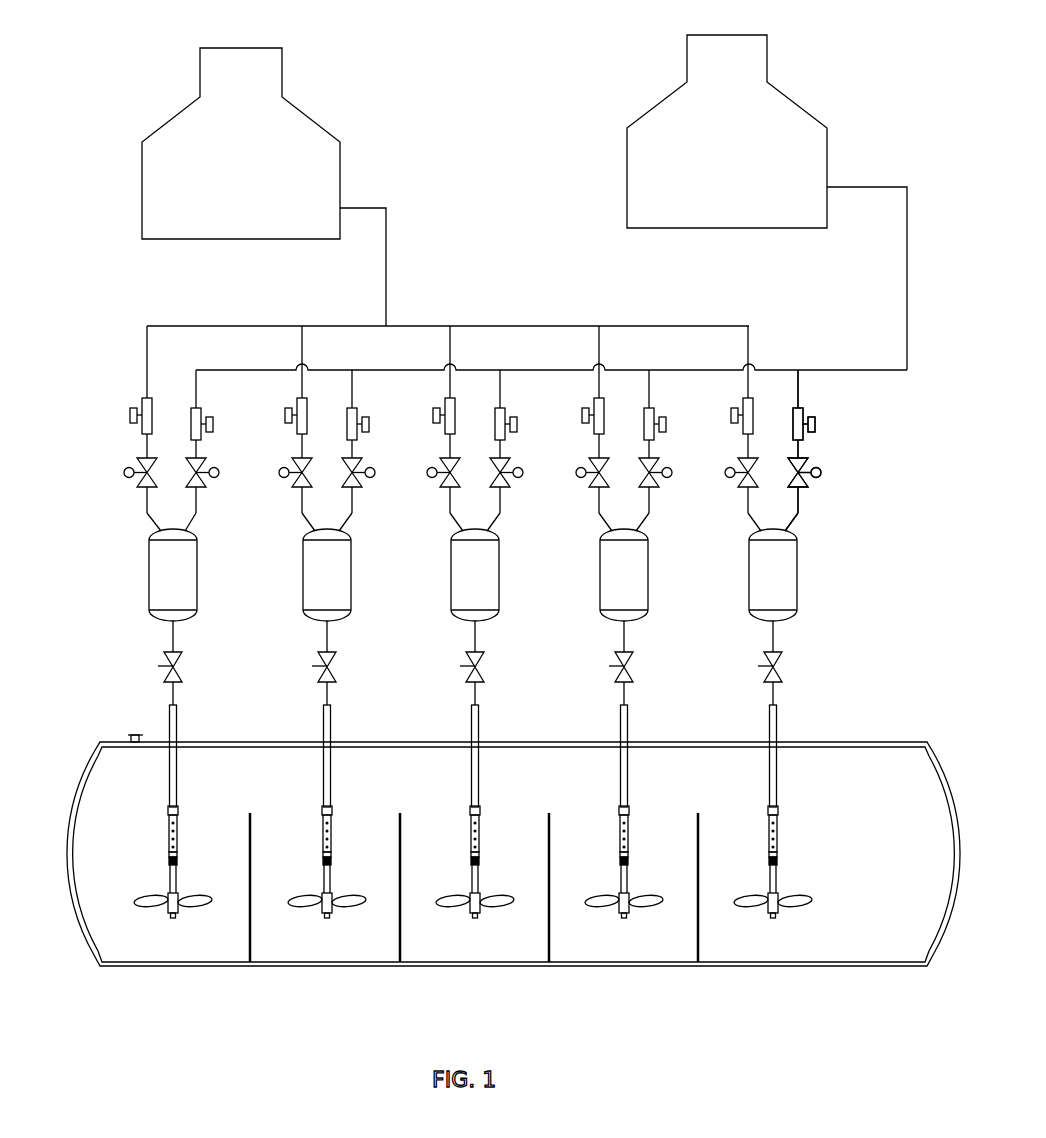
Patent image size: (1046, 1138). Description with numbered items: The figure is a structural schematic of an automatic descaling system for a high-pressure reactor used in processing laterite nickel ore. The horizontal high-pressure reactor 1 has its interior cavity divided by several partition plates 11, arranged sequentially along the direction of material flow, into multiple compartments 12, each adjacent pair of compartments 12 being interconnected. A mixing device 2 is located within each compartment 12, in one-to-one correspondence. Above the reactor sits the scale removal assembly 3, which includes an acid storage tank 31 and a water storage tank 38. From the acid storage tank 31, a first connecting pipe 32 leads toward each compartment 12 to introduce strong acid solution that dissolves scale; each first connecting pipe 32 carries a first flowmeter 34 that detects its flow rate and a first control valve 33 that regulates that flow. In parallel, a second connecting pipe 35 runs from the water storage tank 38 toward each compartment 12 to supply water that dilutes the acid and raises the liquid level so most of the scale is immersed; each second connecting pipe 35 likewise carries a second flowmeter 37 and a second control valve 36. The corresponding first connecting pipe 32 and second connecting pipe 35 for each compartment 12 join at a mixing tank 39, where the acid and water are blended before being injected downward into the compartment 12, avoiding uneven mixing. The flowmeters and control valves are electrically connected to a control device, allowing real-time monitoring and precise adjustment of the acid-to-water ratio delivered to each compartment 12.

The high-pressure reactor 1 is at (92, 806).
The mixing device 2 is at (156, 902).
The scale removal assembly 3 is at (130, 313).
The partition plate 11 is at (250, 968).
The compartment 12 is at (329, 948).
The acid storage tank 31 is at (308, 150).
The first connecting pipe 32 is at (147, 380).
The first control valve 33 is at (124, 473).
The first flowmeter 34 is at (130, 416).
The second connecting pipe 35 is at (197, 385).
The second control valve 36 is at (219, 473).
The second flowmeter 37 is at (215, 425).
The water storage tank 38 is at (648, 155).
The mixing tank 39 is at (165, 577).